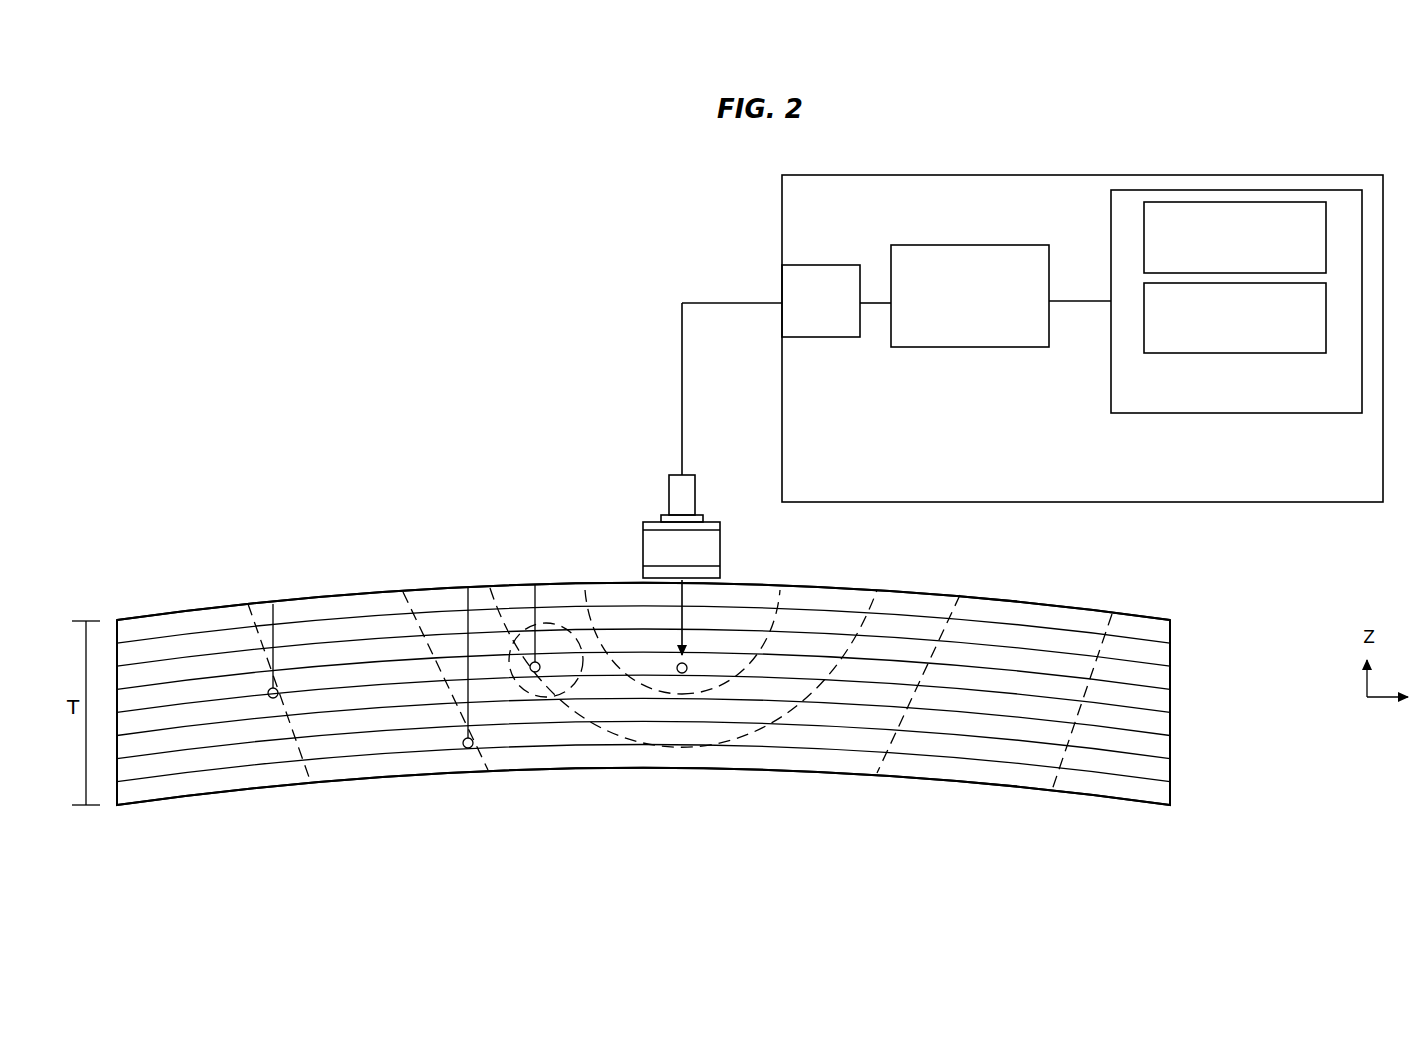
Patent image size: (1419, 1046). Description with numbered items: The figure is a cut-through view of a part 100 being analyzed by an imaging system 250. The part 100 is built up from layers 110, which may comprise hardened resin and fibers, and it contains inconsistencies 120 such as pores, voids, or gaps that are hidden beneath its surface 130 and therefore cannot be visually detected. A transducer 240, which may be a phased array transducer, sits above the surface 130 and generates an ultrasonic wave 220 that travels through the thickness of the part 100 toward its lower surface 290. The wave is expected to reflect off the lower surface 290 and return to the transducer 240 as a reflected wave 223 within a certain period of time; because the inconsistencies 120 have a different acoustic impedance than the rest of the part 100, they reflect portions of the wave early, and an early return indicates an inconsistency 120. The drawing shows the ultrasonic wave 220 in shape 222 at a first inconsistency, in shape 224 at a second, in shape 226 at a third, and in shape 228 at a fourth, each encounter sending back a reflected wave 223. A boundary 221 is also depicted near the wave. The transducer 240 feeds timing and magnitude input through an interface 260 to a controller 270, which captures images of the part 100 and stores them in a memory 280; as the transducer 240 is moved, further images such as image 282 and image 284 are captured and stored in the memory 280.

The part 100 is at (345, 470).
The layers 110 is at (1171, 628).
The inconsistencies 120 is at (271, 698).
The surface 130 is at (560, 582).
The ultrasonic wave 220 is at (684, 612).
The field of view boundary 221 is at (585, 600).
The shape 222 is at (778, 600).
The reflected wave 223 is at (578, 680).
The shape 224 is at (490, 597).
The shape 226 is at (405, 596).
The shape 228 is at (250, 613).
The transducer 240 is at (721, 545).
The imaging system 250 is at (1082, 338).
The interface 260 is at (786, 301).
The controller 270 is at (1001, 296).
The memory 280 is at (1236, 301).
The image 282 is at (1235, 237).
The image 284 is at (1235, 318).
The lower surface 290 is at (803, 775).